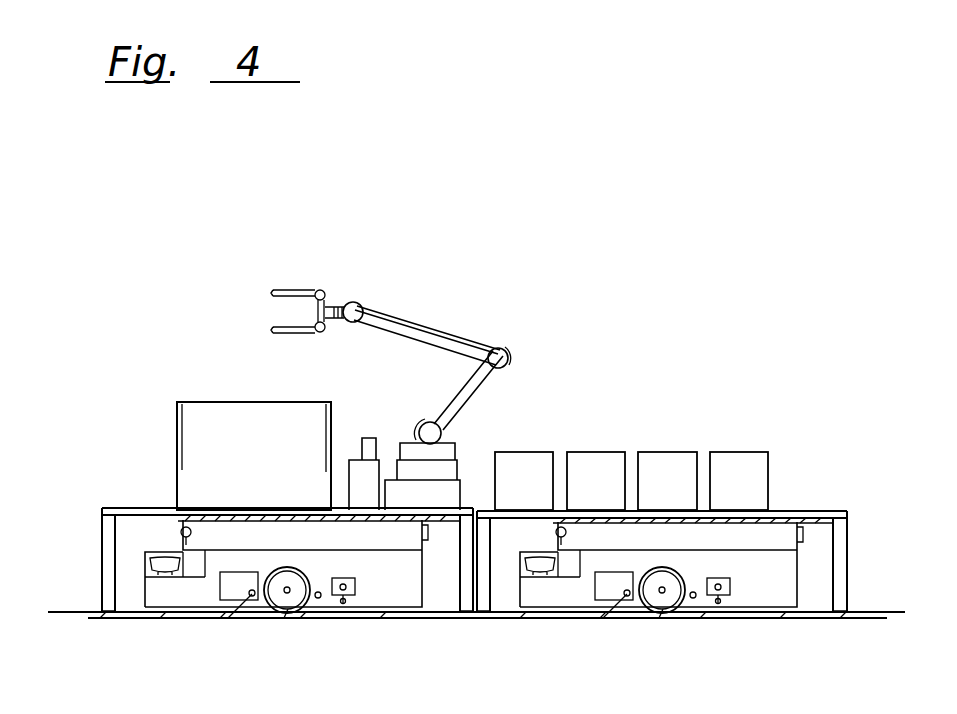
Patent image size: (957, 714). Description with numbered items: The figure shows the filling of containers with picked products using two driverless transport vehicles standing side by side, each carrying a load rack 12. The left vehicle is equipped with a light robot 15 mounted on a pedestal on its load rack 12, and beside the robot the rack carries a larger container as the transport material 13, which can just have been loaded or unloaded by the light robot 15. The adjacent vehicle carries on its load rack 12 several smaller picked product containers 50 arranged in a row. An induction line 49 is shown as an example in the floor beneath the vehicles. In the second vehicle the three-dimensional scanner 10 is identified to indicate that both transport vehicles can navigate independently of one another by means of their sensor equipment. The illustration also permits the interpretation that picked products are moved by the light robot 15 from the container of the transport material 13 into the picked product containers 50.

The 3D scanner 10 is at (693, 594).
The load rack 12 is at (847, 557).
The transport material 13 is at (257, 400).
The light robot 15 is at (435, 323).
The induction line 49 is at (884, 661).
The picked product container 50 is at (750, 452).